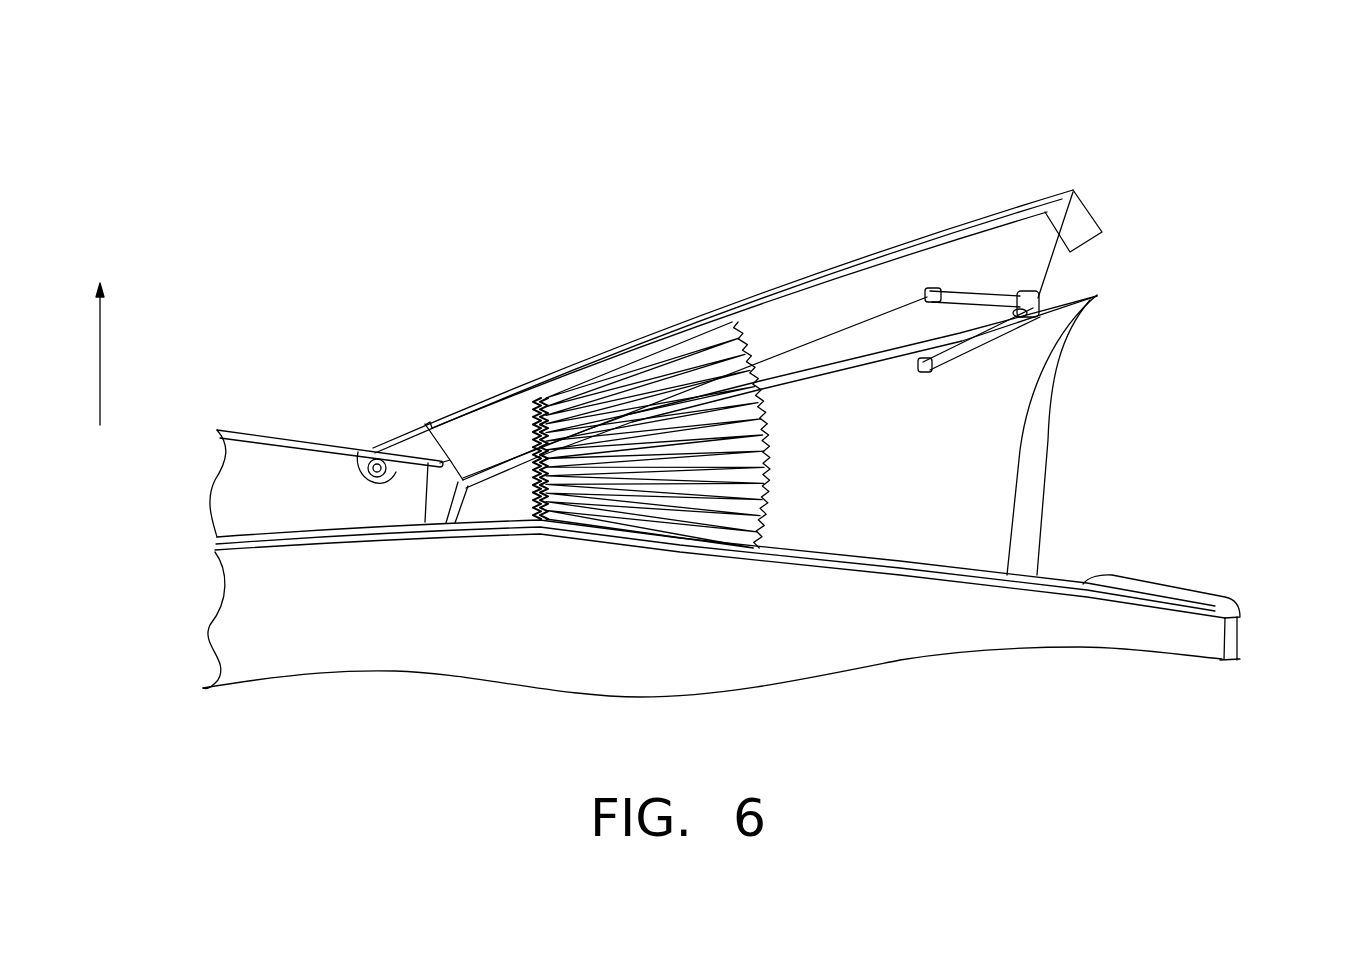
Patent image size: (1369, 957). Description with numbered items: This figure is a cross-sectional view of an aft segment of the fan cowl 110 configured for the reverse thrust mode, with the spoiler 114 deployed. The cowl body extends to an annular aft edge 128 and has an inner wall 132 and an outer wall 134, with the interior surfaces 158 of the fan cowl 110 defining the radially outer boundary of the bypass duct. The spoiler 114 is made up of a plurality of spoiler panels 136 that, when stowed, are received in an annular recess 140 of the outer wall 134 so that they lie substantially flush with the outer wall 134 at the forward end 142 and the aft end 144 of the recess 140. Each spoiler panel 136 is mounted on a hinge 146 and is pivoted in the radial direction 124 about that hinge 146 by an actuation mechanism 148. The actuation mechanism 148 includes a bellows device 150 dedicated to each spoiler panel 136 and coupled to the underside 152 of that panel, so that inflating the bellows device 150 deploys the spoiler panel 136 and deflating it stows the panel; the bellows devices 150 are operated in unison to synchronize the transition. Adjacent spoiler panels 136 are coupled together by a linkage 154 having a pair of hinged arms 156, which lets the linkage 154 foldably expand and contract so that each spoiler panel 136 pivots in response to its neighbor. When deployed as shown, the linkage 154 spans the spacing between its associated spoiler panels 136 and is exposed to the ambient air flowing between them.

The fan cowl 110 is at (604, 245).
The spoiler 114 is at (1104, 268).
The radial direction 124 is at (100, 365).
The aft edge 128 is at (1243, 608).
The inner wall 132 is at (1116, 608).
The outer wall 134 is at (268, 428).
The spoiler panel 136 is at (880, 254).
The recess 140 is at (933, 548).
The forward end of recess 142 is at (450, 456).
The aft end of recess 144 is at (1102, 576).
The hinge 146 is at (378, 460).
The actuation mechanism 148 is at (522, 497).
The bellows device 150 is at (648, 512).
The underside of spoiler panel 152 is at (848, 300).
The linkage 154 is at (1074, 190).
The hinged arms 156 is at (975, 303).
The interior surface 158 is at (935, 585).